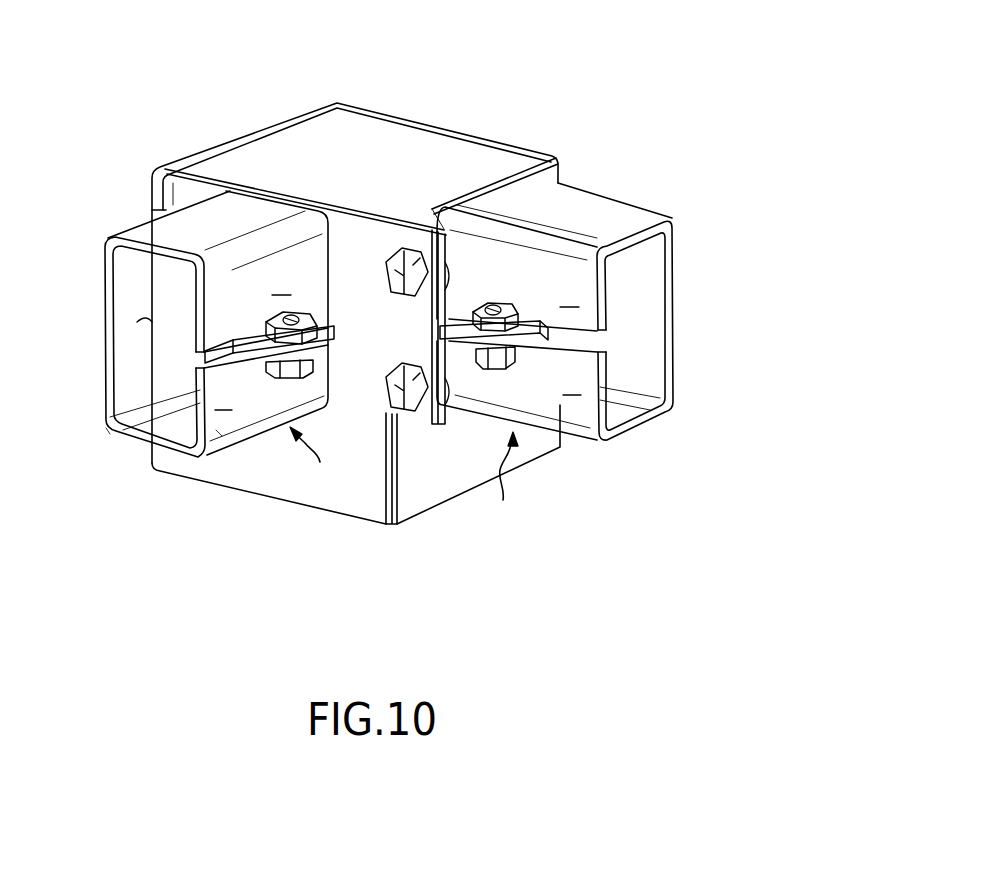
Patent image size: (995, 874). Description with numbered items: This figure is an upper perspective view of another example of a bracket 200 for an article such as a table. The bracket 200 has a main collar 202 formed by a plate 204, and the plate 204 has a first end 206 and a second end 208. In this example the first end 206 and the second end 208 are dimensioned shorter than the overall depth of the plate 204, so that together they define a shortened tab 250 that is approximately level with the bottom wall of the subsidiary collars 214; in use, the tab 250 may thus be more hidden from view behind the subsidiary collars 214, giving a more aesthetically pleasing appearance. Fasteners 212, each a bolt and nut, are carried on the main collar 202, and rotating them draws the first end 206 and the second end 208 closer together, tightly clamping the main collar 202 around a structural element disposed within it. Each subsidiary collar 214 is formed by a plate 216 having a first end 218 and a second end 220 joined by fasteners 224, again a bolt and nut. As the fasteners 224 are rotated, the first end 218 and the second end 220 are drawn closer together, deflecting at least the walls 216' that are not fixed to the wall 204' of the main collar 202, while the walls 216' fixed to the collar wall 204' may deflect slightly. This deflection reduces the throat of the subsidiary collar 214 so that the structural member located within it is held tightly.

The bracket 200 is at (582, 55).
The main collar 202 is at (508, 143).
The plate 204 is at (218, 274).
The wall of the main collar 204' is at (457, 304).
The first end 206 is at (412, 420).
The second end 208 is at (425, 216).
The fasteners 212 is at (398, 293).
The subsidiary collars 214 is at (104, 357).
The plate 216 is at (370, 452).
The walls 216' is at (402, 477).
The first end 218 is at (352, 346).
The second end 220 is at (262, 327).
The fasteners 224 is at (292, 314).
The tab 250 is at (438, 436).